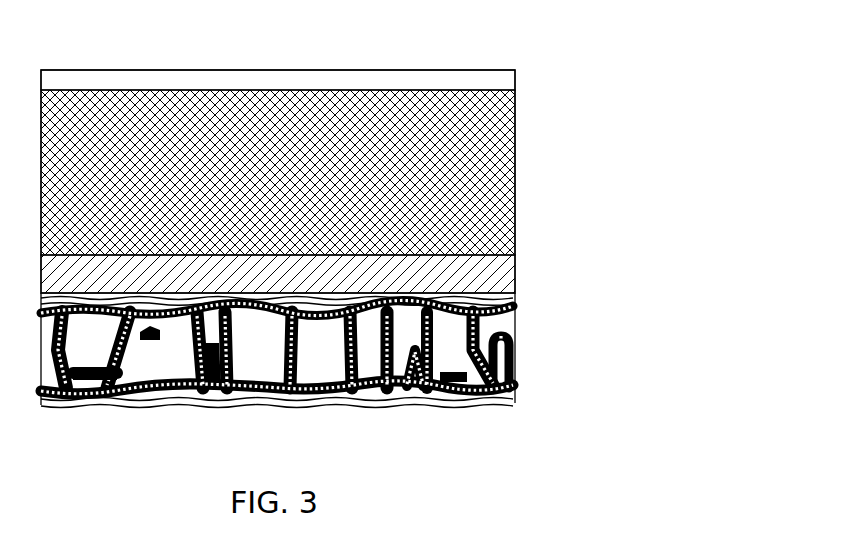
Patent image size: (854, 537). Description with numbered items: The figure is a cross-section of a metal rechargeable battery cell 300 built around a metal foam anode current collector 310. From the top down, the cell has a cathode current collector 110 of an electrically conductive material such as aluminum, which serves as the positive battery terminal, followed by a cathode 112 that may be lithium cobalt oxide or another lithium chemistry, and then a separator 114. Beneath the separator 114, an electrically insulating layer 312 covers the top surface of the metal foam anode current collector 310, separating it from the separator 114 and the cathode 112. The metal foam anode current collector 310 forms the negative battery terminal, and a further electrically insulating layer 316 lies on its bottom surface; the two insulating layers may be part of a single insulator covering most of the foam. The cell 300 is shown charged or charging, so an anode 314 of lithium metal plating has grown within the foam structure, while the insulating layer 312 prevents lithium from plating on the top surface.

The metal rechargeable battery cell 300 is at (122, 46).
The cathode current collector 110 is at (515, 75).
The cathode 112 is at (515, 127).
The separator 114 is at (515, 268).
The electrically insulating layer 312 is at (515, 300).
The metal foam anode current collector 310 is at (513, 306).
The anode 314 is at (513, 373).
The electrically insulating layer 316 is at (470, 398).